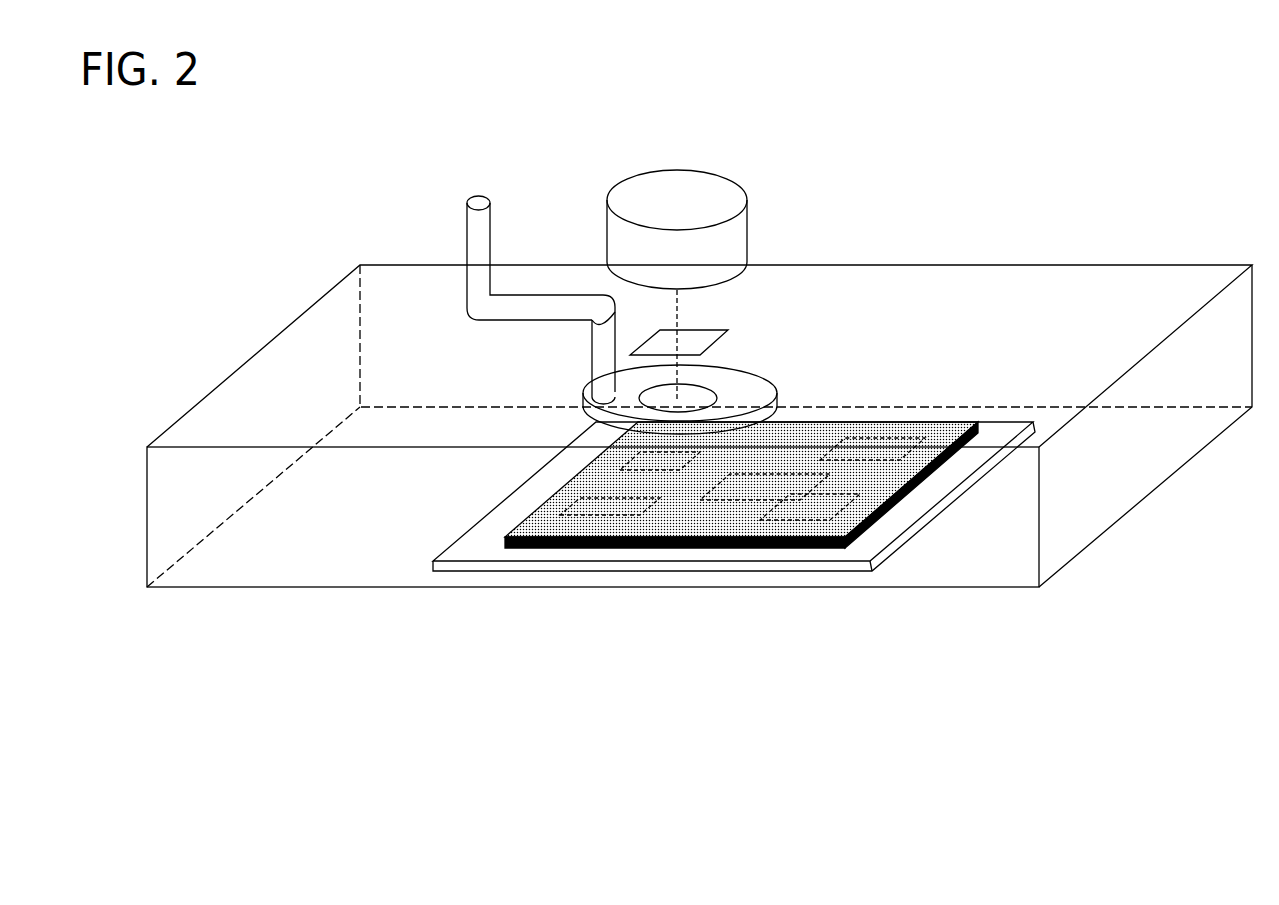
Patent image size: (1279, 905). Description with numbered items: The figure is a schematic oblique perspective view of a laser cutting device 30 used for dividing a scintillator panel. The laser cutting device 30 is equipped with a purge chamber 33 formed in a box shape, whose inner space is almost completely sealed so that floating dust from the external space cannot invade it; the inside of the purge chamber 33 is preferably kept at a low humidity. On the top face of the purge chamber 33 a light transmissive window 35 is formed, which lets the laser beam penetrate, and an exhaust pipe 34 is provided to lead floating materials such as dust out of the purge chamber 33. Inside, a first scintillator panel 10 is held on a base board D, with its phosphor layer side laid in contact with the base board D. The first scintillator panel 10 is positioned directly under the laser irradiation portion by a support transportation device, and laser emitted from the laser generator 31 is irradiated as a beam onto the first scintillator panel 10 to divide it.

The laser cutting device 30 is at (921, 144).
The purge chamber 33 is at (320, 298).
The base board D is at (637, 572).
The first scintillator panel 10 is at (548, 549).
The laser generator 31 is at (748, 233).
The light transmissive window 35 is at (717, 325).
The exhaust pipe 34 is at (483, 230).